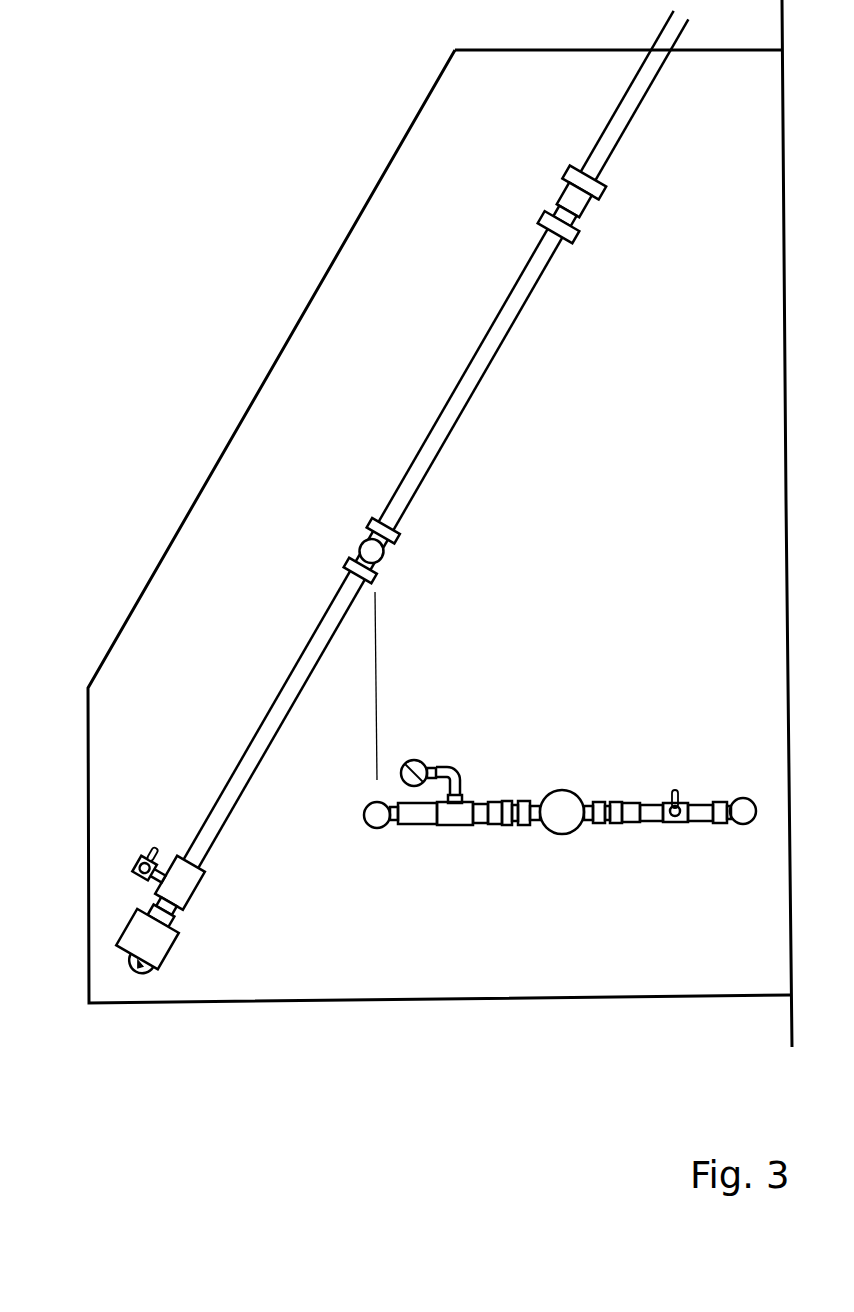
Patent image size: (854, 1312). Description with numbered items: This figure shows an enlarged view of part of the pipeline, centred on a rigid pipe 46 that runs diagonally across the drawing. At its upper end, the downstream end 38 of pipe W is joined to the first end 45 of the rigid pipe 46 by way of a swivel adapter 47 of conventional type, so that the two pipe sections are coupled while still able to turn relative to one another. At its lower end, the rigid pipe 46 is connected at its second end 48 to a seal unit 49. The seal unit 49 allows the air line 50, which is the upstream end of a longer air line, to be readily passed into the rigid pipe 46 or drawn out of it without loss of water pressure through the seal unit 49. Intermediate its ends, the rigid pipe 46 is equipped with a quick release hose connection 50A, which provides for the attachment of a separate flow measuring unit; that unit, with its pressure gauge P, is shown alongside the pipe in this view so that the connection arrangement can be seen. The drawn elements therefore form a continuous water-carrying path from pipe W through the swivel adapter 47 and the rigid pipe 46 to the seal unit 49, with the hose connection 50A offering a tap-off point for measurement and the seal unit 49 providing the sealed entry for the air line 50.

The downstream end 38 is at (367, 148).
The swivel adapter 47 is at (360, 185).
The first end 45 is at (353, 216).
The rigid pipe 46 is at (408, 439).
The quick release hose connection 50A is at (256, 438).
The second end 48 is at (121, 975).
The seal unit 49 is at (196, 1010).
The air line 50 is at (146, 1032).
The pressure gauge P is at (423, 758).